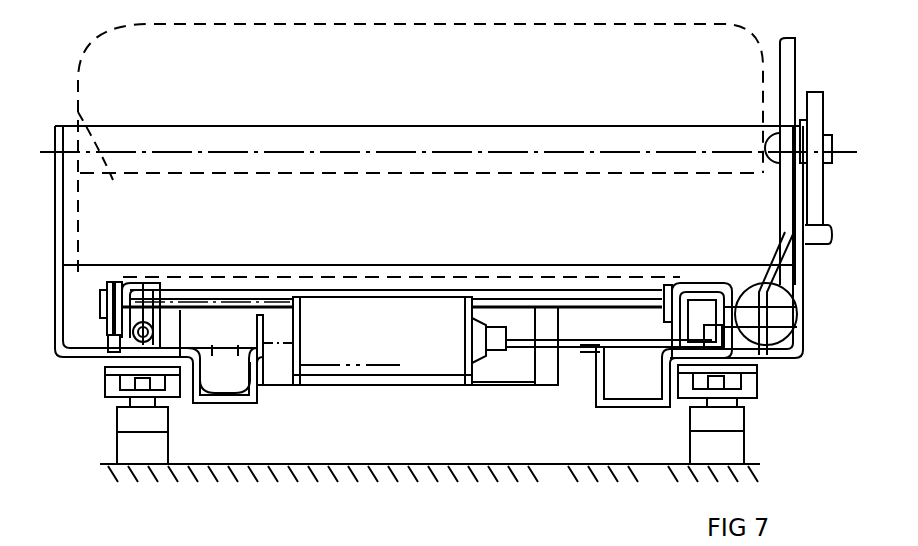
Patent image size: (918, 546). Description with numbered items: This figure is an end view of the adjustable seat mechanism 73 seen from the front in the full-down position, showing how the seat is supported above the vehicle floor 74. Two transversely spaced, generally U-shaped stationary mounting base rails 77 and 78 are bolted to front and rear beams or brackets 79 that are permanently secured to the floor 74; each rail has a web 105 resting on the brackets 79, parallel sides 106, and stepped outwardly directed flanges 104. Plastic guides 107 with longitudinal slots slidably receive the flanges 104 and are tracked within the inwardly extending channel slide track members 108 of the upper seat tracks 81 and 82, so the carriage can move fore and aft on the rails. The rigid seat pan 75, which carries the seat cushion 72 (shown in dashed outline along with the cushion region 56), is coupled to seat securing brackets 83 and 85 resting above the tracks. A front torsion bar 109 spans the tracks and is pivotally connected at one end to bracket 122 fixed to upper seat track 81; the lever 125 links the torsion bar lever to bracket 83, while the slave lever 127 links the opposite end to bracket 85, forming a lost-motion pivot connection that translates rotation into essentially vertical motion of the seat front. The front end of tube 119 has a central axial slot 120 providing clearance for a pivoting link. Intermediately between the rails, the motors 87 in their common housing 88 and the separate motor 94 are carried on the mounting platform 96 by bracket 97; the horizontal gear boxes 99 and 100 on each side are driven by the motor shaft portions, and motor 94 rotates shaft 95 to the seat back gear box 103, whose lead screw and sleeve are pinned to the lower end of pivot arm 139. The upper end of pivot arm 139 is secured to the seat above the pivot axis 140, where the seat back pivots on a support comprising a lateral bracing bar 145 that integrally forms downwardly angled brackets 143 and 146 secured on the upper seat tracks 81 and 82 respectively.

The tub 56 is at (590, 26).
The seat cushion 72 is at (153, 44).
The adjustable seat mechanism 73 is at (622, 108).
The floor 74 is at (550, 462).
The seat pan 75 is at (78, 113).
The mounting base rail 77 is at (117, 403).
The mounting base rail 78 is at (722, 408).
The mounting bracket 79 is at (170, 447).
The upper seat track 81 is at (110, 378).
The upper seat track 82 is at (757, 380).
The seat securing bracket 83 is at (150, 282).
The seat securing bracket 85 is at (709, 279).
The motor 87 is at (496, 386).
The motor housing 88 is at (546, 386).
The motor 94 is at (416, 368).
The output shaft 95 is at (571, 350).
The mounting platform 96 is at (243, 385).
The bracket 97 is at (298, 348).
The right track horizontal gear box 99 is at (604, 396).
The left track horizontal gear box 100 is at (263, 385).
The seat back gear box 103 is at (785, 316).
The flange 104 is at (110, 383).
The web 105 is at (140, 400).
The side 106 is at (690, 410).
The plastic guide 107 is at (757, 395).
The channel slide track member 108 is at (170, 410).
The front torsion bar 109 is at (255, 299).
The tube 119 is at (105, 335).
The central axial slot 120 is at (110, 345).
The bracket 122 is at (107, 285).
The lever 125 is at (125, 290).
The slave lever 127 is at (664, 292).
The pivot arm 139 is at (795, 42).
The pivot axis 140 is at (850, 130).
The side bracket 143 is at (800, 332).
The lateral bracing bar 145 is at (447, 128).
The bracket 146 is at (57, 188).